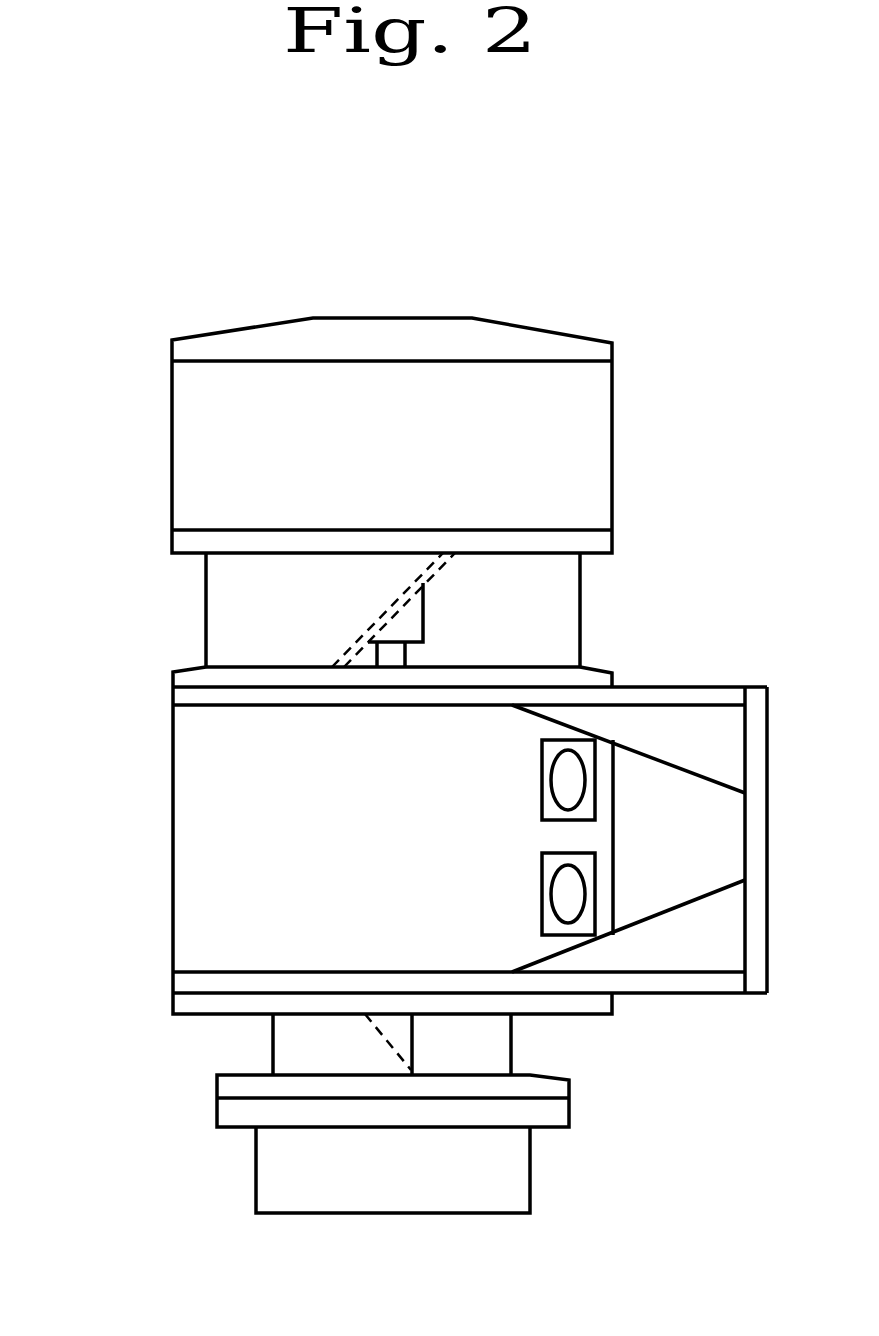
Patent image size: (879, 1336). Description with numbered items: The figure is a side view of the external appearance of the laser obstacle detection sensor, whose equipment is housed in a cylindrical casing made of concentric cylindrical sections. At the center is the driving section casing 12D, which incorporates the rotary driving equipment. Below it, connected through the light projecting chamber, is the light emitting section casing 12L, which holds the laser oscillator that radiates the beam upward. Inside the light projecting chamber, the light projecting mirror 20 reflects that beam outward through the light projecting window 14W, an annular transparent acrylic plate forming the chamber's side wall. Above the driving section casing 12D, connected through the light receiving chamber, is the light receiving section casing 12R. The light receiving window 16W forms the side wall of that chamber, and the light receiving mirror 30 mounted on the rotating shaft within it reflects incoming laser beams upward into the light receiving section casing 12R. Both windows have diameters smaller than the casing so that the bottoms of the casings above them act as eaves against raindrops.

The light receiving section casing 12R is at (612, 460).
The light receiving window 16W is at (570, 607).
The light receiving mirror 30 is at (377, 620).
The driving section casing 12D is at (187, 808).
The light projecting window 14W is at (500, 1045).
The light projecting mirror 20 is at (377, 1033).
The light emitting section casing 12L is at (513, 1170).